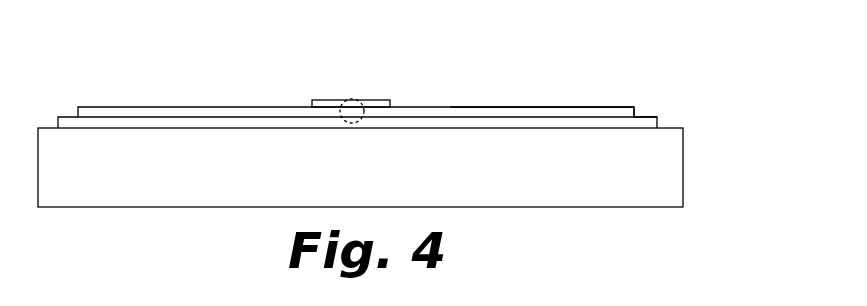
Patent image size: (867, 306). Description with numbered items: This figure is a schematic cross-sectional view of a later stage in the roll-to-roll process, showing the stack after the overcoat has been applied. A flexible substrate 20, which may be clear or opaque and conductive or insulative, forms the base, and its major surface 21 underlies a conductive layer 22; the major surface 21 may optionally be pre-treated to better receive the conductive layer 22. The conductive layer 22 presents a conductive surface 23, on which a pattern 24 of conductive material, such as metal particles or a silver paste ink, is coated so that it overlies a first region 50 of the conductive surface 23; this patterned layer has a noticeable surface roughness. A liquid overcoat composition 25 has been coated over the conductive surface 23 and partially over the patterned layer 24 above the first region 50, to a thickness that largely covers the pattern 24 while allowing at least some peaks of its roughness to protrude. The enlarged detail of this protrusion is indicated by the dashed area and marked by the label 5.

The flexible substrate 20 is at (668, 172).
The major surface 21 is at (675, 128).
The conductive layer 22 is at (645, 115).
The conductive surface 23 is at (178, 123).
The pattern of conductive material 24 is at (382, 100).
The liquid overcoat composition 25 is at (565, 110).
The first region 50 is at (322, 117).
The section indicator 5 is at (352, 94).